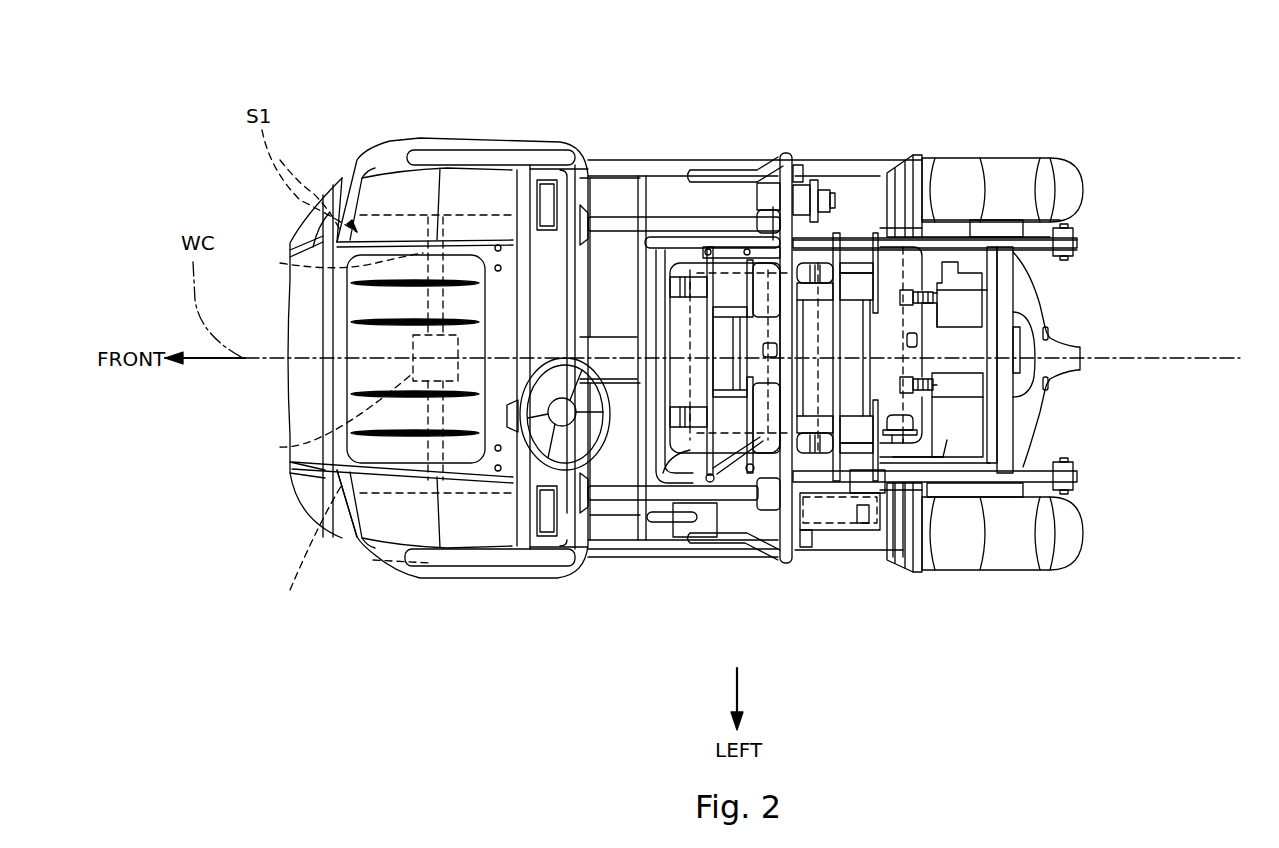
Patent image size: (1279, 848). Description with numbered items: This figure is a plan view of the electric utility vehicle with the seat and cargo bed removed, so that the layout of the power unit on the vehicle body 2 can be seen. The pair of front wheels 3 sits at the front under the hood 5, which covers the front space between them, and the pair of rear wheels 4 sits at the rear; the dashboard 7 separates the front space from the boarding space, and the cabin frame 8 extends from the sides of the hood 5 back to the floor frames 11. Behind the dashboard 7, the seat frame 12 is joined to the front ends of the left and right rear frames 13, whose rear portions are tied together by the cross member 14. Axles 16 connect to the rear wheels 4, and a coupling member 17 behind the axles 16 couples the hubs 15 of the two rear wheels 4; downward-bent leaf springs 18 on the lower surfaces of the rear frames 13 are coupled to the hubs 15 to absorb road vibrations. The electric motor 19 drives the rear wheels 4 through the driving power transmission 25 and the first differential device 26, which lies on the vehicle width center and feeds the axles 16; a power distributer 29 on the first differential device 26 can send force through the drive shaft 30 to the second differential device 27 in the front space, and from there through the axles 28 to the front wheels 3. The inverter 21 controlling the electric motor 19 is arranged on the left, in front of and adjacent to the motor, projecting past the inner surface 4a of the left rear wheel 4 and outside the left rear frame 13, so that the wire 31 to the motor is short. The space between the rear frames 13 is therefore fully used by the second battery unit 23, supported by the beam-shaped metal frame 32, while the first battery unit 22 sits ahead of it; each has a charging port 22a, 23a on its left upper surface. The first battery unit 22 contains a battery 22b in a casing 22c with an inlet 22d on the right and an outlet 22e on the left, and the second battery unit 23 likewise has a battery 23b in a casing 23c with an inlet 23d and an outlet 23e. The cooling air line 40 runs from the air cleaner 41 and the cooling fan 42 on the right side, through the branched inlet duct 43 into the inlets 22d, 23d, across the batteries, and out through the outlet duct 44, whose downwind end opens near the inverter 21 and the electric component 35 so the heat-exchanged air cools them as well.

The vehicle body 2 is at (560, 572).
The front wheels 3 is at (400, 150).
The rear wheels 4 is at (1075, 200).
The inner surface of the rear wheel 4a is at (1080, 497).
The hood 5 is at (360, 370).
The dashboard 7 is at (530, 322).
The cabin frame 8 is at (590, 207).
The floor frames 11 is at (640, 562).
The seat frame 12 is at (645, 178).
The rear frames 13 is at (1038, 158).
The cross member 14 is at (1003, 560).
The hubs 15 is at (992, 175).
The axles 16 is at (1000, 303).
The coupling member 17 is at (1020, 272).
The leaf springs 18 is at (1075, 240).
The electric motor 19 is at (945, 545).
The inverter 21 is at (845, 530).
The first battery unit 22 is at (665, 255).
The charging port 22a is at (740, 470).
The battery 22b is at (620, 500).
The casing 22c is at (583, 562).
The inlet 22d is at (640, 238).
The outlet 22e is at (690, 455).
The second battery unit 23 is at (850, 250).
The charging port 23a is at (870, 512).
The battery 23b is at (963, 310).
The casing 23c is at (930, 280).
The inlet 23d is at (880, 230).
The outlet 23e is at (915, 422).
The driving power transmission 25 is at (1000, 383).
The first differential device 26 is at (1047, 353).
The second differential device 27 is at (330, 420).
The axles 28 is at (318, 270).
The power distributer 29 is at (980, 347).
The drive shaft 30 is at (950, 262).
The wire 31 is at (912, 552).
The metal frame 32 is at (793, 150).
The electric component 35 is at (865, 540).
The cooling air line 40 is at (672, 452).
The air cleaner 41 is at (815, 180).
The cooling fan 42 is at (745, 168).
The inlet duct 43 is at (757, 183).
The outlet duct 44 is at (806, 547).